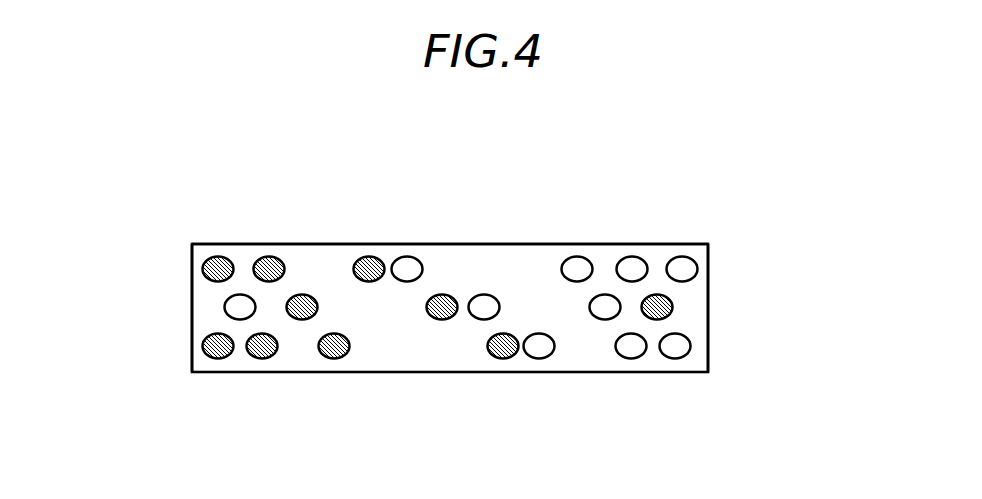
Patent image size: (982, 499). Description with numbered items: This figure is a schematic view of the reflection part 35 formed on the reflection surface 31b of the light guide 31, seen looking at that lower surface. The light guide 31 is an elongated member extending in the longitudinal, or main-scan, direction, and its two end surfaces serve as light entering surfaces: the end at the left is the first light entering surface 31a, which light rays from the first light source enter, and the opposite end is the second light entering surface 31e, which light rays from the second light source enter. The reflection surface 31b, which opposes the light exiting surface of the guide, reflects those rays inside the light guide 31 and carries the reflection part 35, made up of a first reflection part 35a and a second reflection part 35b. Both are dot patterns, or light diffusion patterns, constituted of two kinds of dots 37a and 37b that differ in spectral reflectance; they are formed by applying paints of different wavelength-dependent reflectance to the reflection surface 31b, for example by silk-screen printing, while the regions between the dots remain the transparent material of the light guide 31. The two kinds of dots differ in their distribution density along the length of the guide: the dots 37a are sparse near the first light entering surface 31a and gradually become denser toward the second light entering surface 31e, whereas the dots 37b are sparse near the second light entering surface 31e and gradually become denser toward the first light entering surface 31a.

The light guide 31 is at (446, 296).
The first light entering surface 31a is at (192, 295).
The reflection surface 31b is at (475, 255).
The second light entering surface 31e is at (708, 293).
The reflection part 35 is at (452, 378).
The first reflection part 35a is at (438, 343).
The second reflection part 35b is at (461, 343).
The dots 37a is at (653, 382).
The dots 37b is at (250, 357).